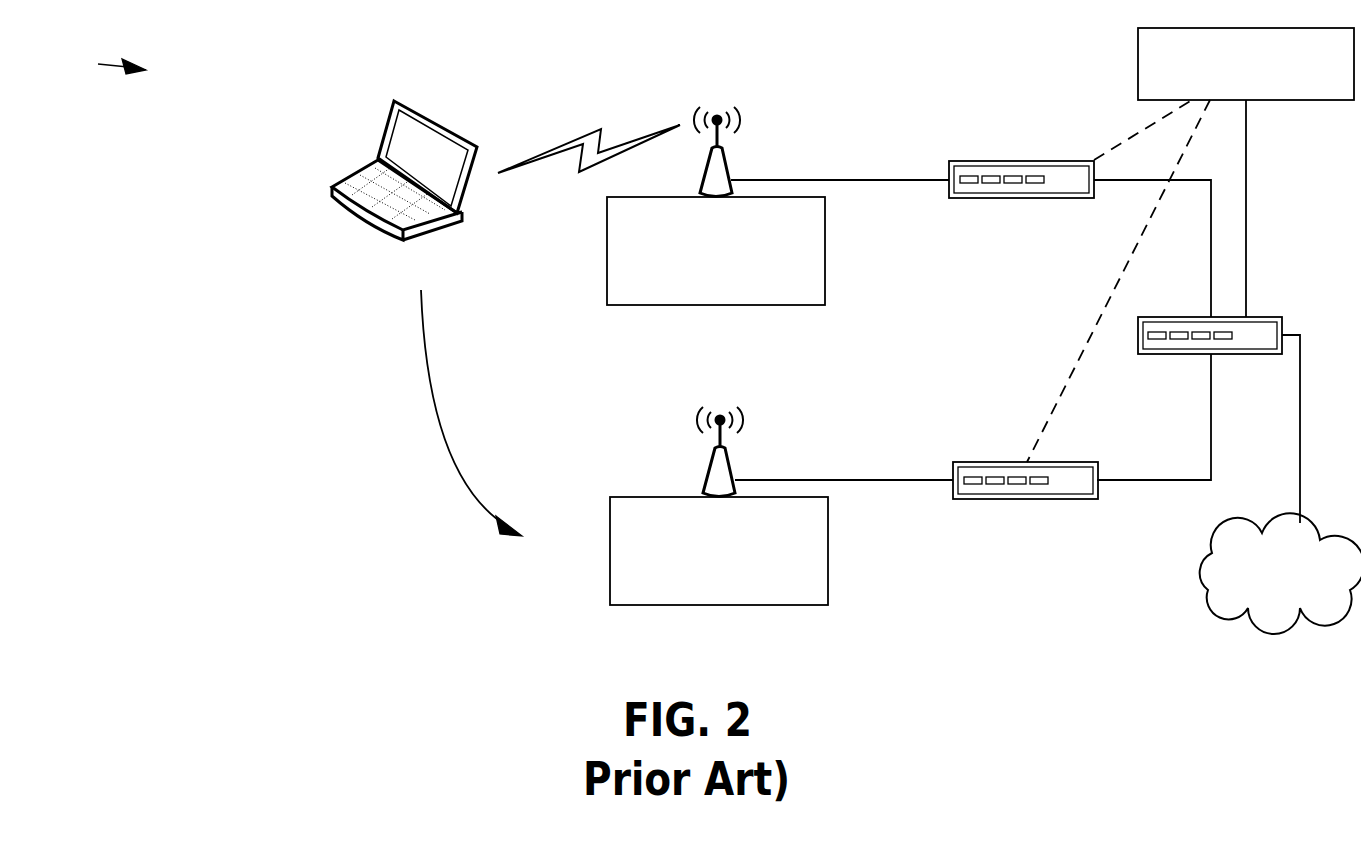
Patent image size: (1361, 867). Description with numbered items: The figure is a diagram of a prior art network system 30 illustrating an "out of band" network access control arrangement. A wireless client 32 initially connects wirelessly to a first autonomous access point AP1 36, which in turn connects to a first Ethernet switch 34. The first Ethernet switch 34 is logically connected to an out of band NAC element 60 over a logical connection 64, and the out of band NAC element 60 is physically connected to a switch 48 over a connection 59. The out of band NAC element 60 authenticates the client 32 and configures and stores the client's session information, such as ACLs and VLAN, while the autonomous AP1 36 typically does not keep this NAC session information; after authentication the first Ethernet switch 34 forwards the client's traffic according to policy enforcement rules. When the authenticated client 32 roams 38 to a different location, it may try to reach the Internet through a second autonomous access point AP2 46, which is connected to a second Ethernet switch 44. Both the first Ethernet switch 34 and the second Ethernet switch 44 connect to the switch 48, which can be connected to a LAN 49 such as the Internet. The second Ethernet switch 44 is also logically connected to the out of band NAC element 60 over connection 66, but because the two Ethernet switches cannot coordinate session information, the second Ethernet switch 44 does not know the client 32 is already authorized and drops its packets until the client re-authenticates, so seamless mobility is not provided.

The prior art network system 30 is at (106, 65).
The wireless client 32 is at (427, 113).
The first Ethernet switch 34 is at (968, 161).
The first autonomous access point AP1 36 is at (731, 169).
The roam 38 is at (427, 372).
The second Ethernet switch 44 is at (966, 462).
The second autonomous access point AP2 46 is at (734, 463).
The switch 48 is at (1193, 317).
The LAN 49 is at (1255, 613).
The connection 59 is at (1247, 192).
The out of band NAC element 60 is at (1137, 63).
The logical connection 64 is at (1142, 133).
The connection 66 is at (1090, 335).